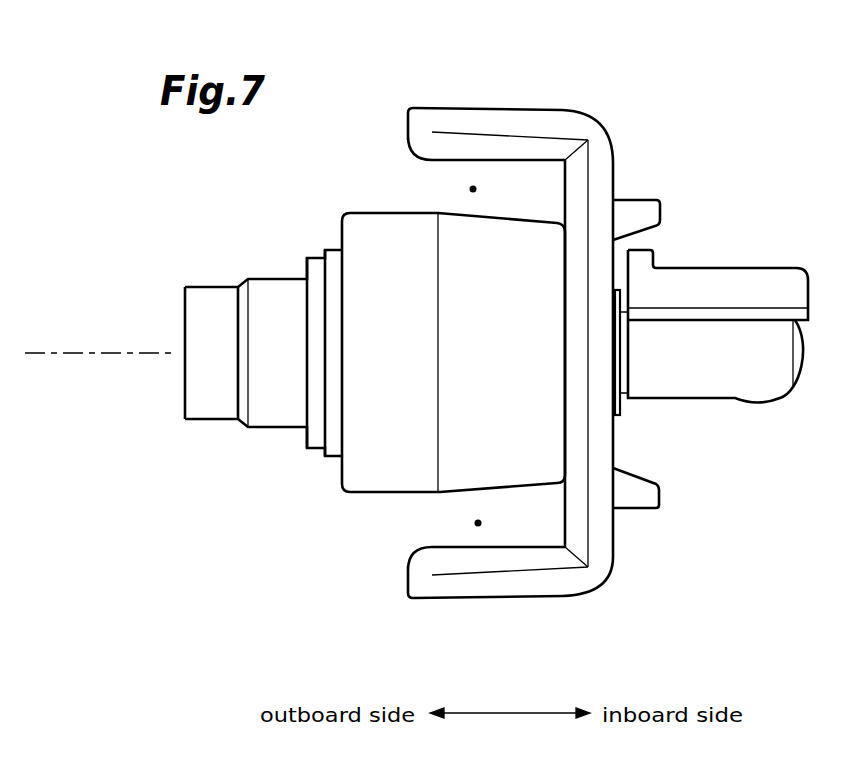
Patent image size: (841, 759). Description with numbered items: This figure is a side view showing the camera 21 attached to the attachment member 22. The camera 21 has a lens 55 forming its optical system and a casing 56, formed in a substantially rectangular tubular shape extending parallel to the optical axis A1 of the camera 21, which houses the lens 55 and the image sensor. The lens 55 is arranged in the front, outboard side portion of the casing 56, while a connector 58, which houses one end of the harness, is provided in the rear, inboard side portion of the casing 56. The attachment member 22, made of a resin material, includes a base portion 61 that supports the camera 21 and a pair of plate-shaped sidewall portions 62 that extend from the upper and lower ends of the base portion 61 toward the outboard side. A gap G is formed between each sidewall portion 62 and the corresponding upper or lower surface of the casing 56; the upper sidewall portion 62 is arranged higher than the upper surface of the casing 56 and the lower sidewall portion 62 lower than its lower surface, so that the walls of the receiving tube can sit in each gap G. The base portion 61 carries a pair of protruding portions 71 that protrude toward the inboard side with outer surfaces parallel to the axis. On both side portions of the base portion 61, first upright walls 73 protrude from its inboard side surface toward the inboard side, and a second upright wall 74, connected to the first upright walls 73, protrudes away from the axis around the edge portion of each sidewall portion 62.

The camera 21 is at (354, 378).
The attachment member 22 is at (573, 349).
The lens 55 is at (183, 317).
The casing 56 is at (275, 447).
The connector 58 is at (752, 290).
The base portion 61 is at (577, 528).
The sidewall portion 62 is at (459, 143).
The protruding portion 71 is at (635, 208).
The first upright wall 73 is at (602, 172).
The second upright wall 74 is at (523, 123).
The optical axis A1 is at (87, 356).
The gap G is at (470, 189).